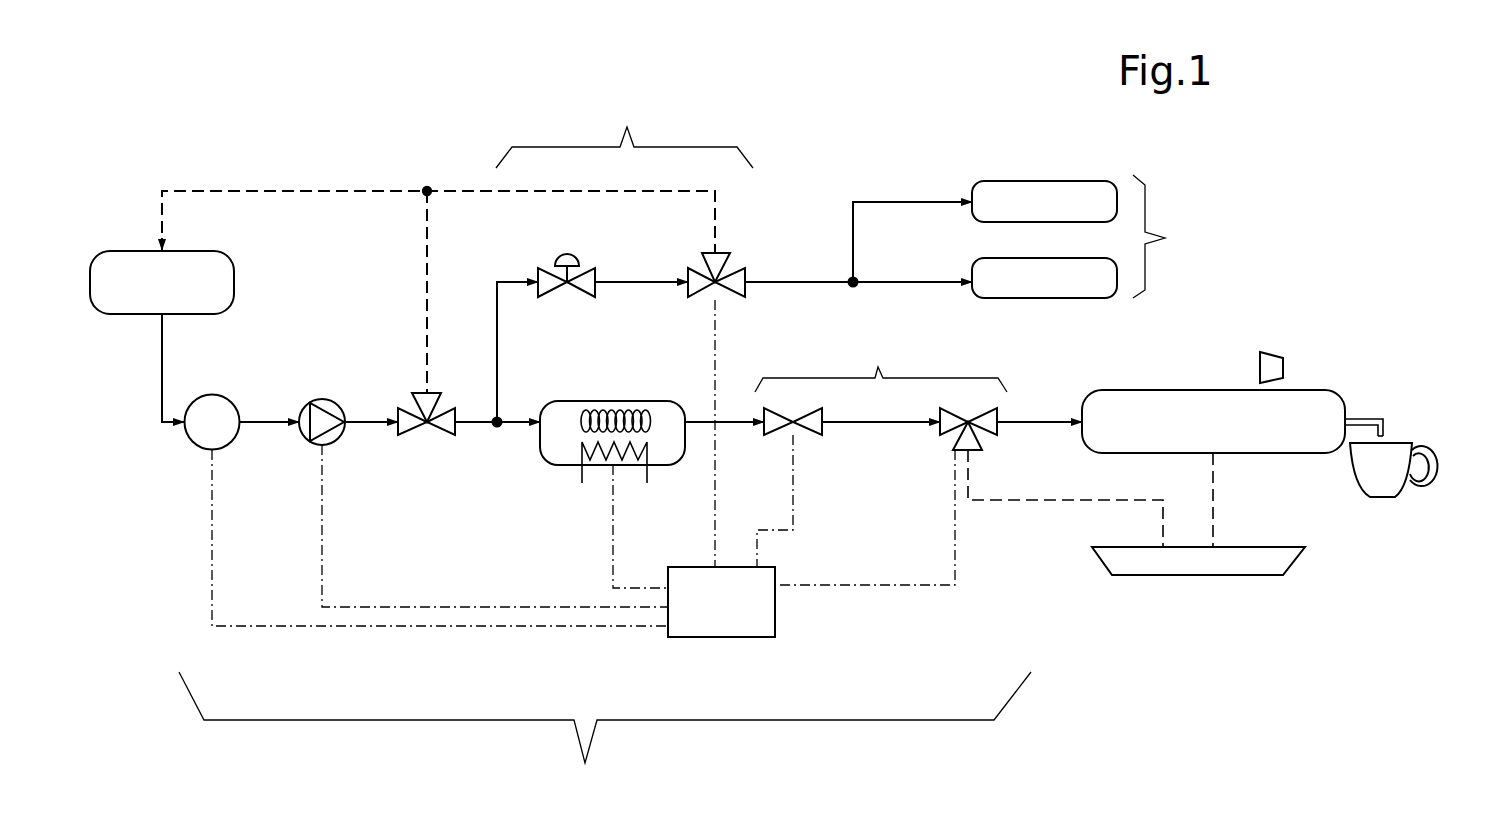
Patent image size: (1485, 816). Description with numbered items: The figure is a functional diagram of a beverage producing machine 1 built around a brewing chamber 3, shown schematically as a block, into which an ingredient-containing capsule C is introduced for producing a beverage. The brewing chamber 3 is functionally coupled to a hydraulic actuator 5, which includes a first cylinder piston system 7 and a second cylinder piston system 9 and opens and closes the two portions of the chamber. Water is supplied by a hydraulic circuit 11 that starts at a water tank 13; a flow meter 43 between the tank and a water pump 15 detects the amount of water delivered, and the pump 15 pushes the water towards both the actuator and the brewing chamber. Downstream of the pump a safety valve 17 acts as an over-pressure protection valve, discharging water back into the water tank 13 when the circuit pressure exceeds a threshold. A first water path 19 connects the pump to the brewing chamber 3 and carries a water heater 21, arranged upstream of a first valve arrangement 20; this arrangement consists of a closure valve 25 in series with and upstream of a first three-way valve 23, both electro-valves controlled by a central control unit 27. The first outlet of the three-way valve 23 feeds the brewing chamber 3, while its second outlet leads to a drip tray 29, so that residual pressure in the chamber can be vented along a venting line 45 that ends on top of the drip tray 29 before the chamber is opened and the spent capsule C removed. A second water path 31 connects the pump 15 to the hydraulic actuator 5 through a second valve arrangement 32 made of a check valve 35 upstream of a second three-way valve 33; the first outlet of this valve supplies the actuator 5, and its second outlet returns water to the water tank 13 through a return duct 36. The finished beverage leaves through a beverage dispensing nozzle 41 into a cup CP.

The beverage producing machine 1 is at (856, 108).
The brewing chamber 3 is at (1178, 376).
The hydraulic actuator 5 is at (1158, 236).
The first cylinder piston system 7 is at (1023, 188).
The second cylinder piston system 9 is at (1028, 268).
The hydraulic circuit 11 is at (605, 733).
The water tank 13 is at (217, 277).
The water pump 15 is at (322, 400).
The safety valve 17 is at (445, 426).
The first water path 19 is at (706, 414).
The first valve arrangement 20 is at (881, 367).
The water heater 21 is at (577, 403).
The first three-way valve 23 is at (949, 428).
The closure valve 25 is at (806, 434).
The central control unit 27 is at (768, 622).
The drip tray 29 is at (1207, 565).
The second water path 31 is at (808, 272).
The second valve arrangement 32 is at (624, 133).
The second three-way valve 33 is at (709, 264).
The check valve 35 is at (543, 280).
The return duct 36 is at (342, 188).
The beverage dispensing nozzle 41 is at (1364, 417).
The flow meter 43 is at (222, 412).
The venting line 45 is at (1050, 503).
The capsule C is at (1275, 353).
The cup CP is at (1382, 478).